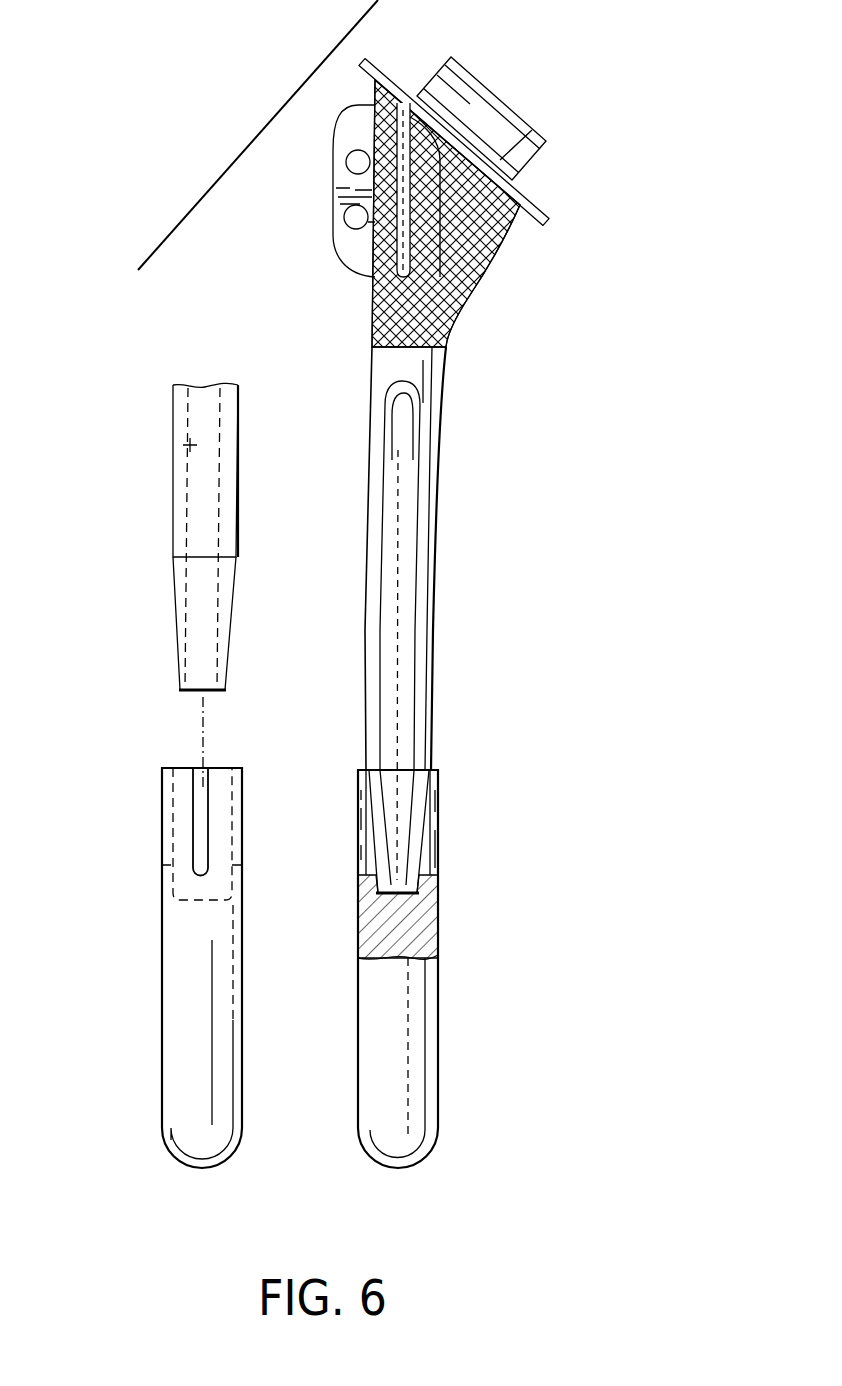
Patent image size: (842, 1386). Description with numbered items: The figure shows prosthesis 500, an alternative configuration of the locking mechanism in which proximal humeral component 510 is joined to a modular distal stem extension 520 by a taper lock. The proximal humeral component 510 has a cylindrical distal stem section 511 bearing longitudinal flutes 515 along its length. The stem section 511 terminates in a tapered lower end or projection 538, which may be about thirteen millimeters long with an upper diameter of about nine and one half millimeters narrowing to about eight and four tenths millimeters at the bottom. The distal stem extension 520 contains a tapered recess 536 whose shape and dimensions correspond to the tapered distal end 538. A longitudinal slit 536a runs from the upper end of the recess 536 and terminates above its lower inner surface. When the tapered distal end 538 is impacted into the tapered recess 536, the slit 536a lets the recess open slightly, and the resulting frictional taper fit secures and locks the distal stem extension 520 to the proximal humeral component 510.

The prosthesis 500 is at (367, 612).
The proximal humeral component 510 is at (437, 677).
The cylindrical distal stem section 511 is at (317, 620).
The longitudinal flutes 515 is at (408, 483).
The modular distal stem extension 520 is at (290, 944).
The tapered recess 536 is at (173, 825).
The longitudinal slit 536a is at (198, 772).
The tapered lower end 538 is at (173, 642).